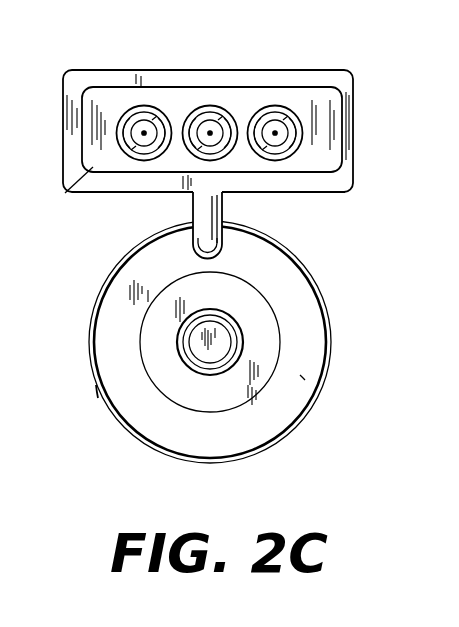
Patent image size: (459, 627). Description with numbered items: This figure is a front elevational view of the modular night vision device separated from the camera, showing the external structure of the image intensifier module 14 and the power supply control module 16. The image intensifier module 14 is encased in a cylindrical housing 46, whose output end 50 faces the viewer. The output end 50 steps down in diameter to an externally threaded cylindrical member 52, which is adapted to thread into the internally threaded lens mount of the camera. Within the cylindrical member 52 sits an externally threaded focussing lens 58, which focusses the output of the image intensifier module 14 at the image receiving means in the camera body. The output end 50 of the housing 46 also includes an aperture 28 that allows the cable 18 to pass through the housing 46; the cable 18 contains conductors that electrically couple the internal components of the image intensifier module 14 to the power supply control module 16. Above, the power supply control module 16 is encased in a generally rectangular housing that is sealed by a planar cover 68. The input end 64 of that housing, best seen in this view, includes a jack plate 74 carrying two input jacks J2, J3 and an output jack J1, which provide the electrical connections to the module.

The power supply control module 16 is at (343, 70).
The input end 64 is at (345, 88).
The planar cover 68 is at (335, 192).
The jack plate 74 is at (80, 183).
The output jack J1 is at (147, 106).
The input jack J2 is at (212, 106).
The input jack J3 is at (277, 106).
The cable 18 is at (222, 208).
The aperture 28 is at (222, 252).
The image intensifier module 14 is at (110, 275).
The cylindrical housing 46 is at (103, 389).
The output end 50 is at (300, 375).
The externally threaded cylindrical member 52 is at (280, 320).
The focussing lens 58 is at (210, 310).